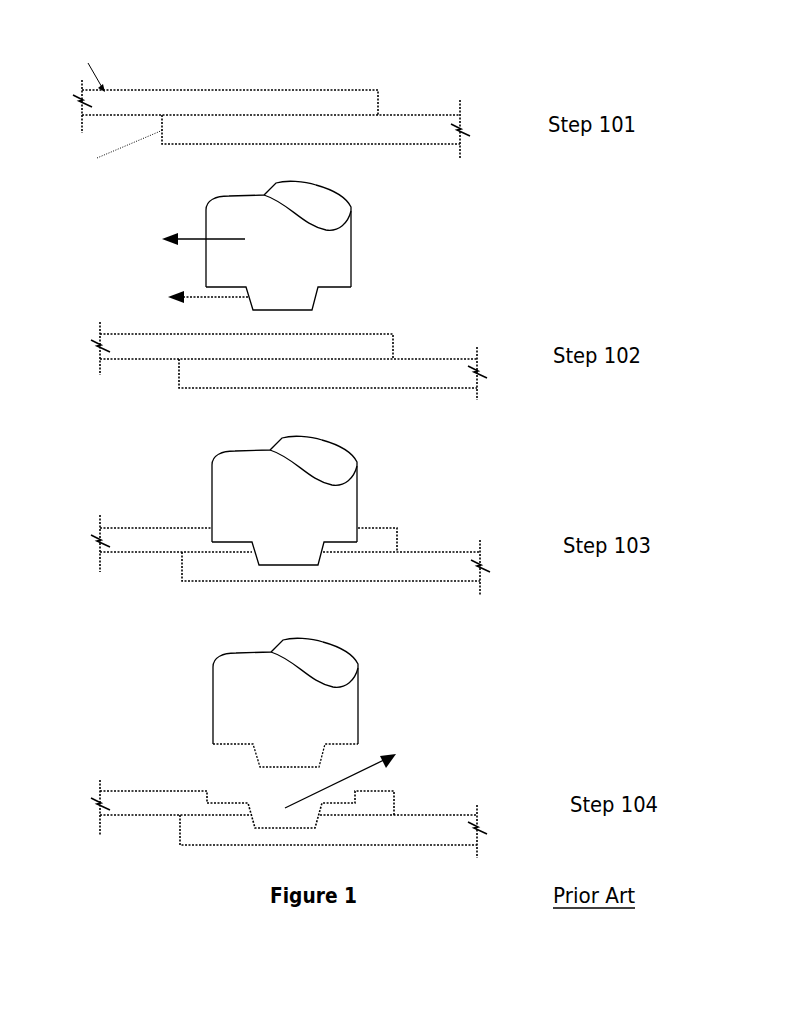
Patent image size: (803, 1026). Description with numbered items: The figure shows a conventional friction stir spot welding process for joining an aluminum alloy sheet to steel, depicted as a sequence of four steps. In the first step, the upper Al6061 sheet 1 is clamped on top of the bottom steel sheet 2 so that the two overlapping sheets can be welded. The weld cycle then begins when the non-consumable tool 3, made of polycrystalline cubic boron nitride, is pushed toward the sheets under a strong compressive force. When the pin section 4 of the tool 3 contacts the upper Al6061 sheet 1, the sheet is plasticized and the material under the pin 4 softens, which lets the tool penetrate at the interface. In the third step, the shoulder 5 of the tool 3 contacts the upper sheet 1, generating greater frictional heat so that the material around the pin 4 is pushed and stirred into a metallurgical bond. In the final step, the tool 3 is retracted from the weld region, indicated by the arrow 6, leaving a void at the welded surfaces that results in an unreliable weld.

The upper Al6061 sheet 1 is at (348, 91).
The bottom steel sheet 2 is at (463, 135).
The non-consumable tool 3 is at (352, 240).
The pin section 4 is at (186, 297).
The shoulder 5 is at (180, 237).
The tool retraction direction 6 is at (354, 771).